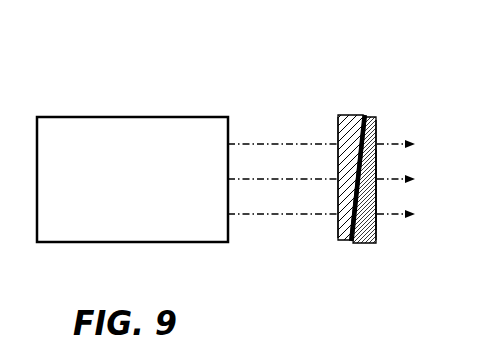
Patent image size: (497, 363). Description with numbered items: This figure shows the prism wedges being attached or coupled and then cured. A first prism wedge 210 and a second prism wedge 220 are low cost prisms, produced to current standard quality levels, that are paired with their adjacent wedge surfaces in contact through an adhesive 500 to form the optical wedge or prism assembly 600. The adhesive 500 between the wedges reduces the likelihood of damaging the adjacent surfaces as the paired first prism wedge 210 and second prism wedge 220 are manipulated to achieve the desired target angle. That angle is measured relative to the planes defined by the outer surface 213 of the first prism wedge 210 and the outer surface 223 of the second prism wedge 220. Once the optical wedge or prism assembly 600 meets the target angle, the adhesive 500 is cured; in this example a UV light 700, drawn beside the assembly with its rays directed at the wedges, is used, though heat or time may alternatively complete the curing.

The UV light 700 is at (115, 132).
The optical wedge or prism assembly 600 is at (377, 63).
The first prism wedge 210 is at (336, 128).
The outer surface 213 is at (331, 230).
The second prism wedge 220 is at (377, 132).
The outer surface 223 is at (386, 162).
The adhesive 500 is at (376, 197).